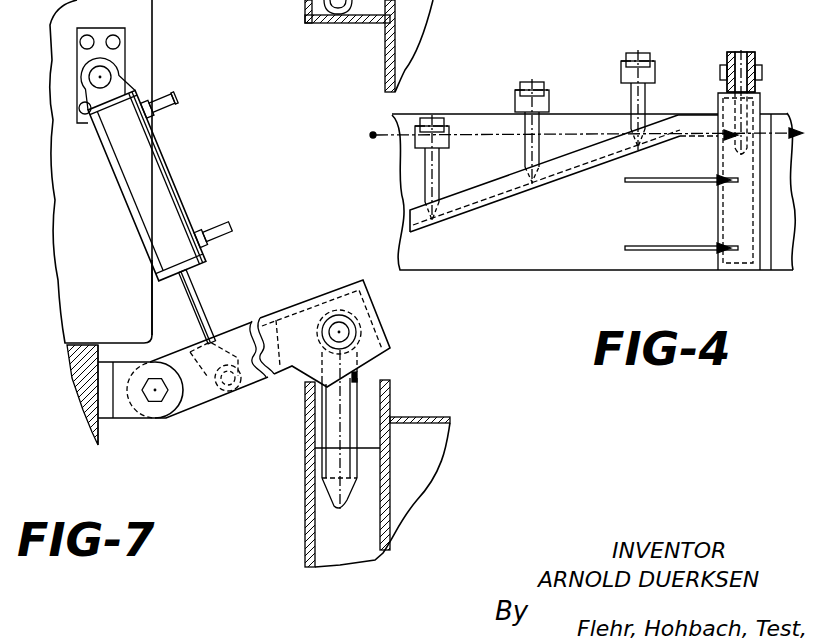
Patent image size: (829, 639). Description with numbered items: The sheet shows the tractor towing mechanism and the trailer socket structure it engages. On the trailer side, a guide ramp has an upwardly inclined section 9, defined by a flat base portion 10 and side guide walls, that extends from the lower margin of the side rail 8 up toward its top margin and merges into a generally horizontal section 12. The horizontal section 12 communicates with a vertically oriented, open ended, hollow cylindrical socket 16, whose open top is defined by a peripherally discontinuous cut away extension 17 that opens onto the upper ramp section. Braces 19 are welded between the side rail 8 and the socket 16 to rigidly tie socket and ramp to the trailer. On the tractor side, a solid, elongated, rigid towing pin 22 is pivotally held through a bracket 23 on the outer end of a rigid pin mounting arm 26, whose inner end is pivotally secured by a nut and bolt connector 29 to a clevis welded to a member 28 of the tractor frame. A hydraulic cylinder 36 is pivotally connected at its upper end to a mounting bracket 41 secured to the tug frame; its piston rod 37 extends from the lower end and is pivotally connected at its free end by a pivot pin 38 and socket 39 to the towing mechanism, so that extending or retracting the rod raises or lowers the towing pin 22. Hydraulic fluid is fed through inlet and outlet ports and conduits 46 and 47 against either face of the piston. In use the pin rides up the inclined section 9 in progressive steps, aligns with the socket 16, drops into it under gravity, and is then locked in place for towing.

In FIG. 7, the side rail 8 is at (393, 502).
In FIG. 4, the side rail 8 is at (546, 262).
In FIG. 4, the upwardly inclined section 9 is at (467, 200).
In FIG. 7, the flat base portion 10 is at (327, 23).
In FIG. 4, the horizontal section 12 is at (690, 123).
In FIG. 7, the cylindrical socket 16 is at (310, 487).
In FIG. 4, the cylindrical socket 16 is at (745, 232).
In FIG. 7, the cut away extension 17 is at (388, 398).
In FIG. 4, the cut away extension 17 is at (762, 97).
In FIG. 4, the braces 19 is at (677, 246).
In FIG. 7, the towing pin 22 is at (358, 385).
In FIG. 4, the towing pin 22 is at (423, 178).
In FIG. 7, the bracket 23 is at (305, 365).
In FIG. 4, the bracket 23 is at (737, 52).
In FIG. 7, the pin mounting arm 26 is at (262, 322).
In FIG. 7, the member 28 is at (106, 413).
In FIG. 7, the nut and bolt connector 29 is at (158, 399).
In FIG. 7, the hydraulic cylinder 36 is at (167, 173).
In FIG. 7, the piston rod 37 is at (205, 298).
In FIG. 7, the pivot pin 38 is at (212, 395).
In FIG. 7, the socket 39 is at (191, 350).
In FIG. 7, the mounting bracket 41 is at (118, 53).
In FIG. 7, the inlet and outlet port and conduit 46 is at (167, 90).
In FIG. 7, the inlet and outlet port and conduit 47 is at (232, 221).